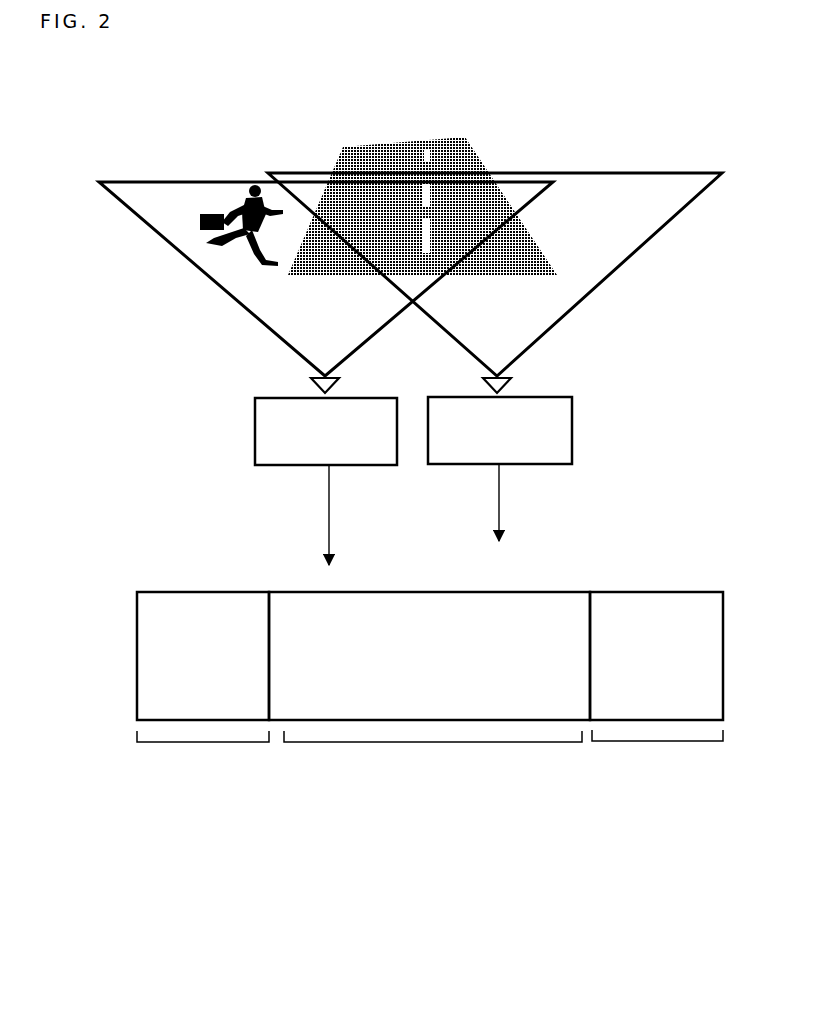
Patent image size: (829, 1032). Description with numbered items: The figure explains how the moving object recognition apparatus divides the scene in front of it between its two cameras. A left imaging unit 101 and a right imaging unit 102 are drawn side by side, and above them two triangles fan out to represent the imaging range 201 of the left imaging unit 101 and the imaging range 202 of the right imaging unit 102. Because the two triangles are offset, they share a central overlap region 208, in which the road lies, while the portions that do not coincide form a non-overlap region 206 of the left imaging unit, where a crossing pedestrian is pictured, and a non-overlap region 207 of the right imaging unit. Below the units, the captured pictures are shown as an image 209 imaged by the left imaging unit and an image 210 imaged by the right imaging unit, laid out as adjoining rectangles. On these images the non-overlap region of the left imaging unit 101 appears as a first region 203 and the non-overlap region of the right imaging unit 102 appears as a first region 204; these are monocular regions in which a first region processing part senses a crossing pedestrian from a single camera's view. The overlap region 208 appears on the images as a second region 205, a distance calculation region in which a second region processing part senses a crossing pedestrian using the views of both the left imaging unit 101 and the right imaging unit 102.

The left imaging unit 101 is at (255, 429).
The right imaging unit 102 is at (575, 438).
The imaging range of the left imaging unit 201 is at (163, 240).
The imaging range of the right imaging unit 202 is at (612, 271).
The first region 203 is at (147, 677).
The first region 204 is at (705, 693).
The second region 205 is at (429, 740).
The non-overlap region of the left imaging unit 206 is at (217, 190).
The non-overlap region of the right imaging unit 207 is at (641, 102).
The overlap region 208 is at (435, 178).
The image imaged by the left imaging unit 209 is at (361, 559).
The image imaged by the right imaging unit 210 is at (493, 537).